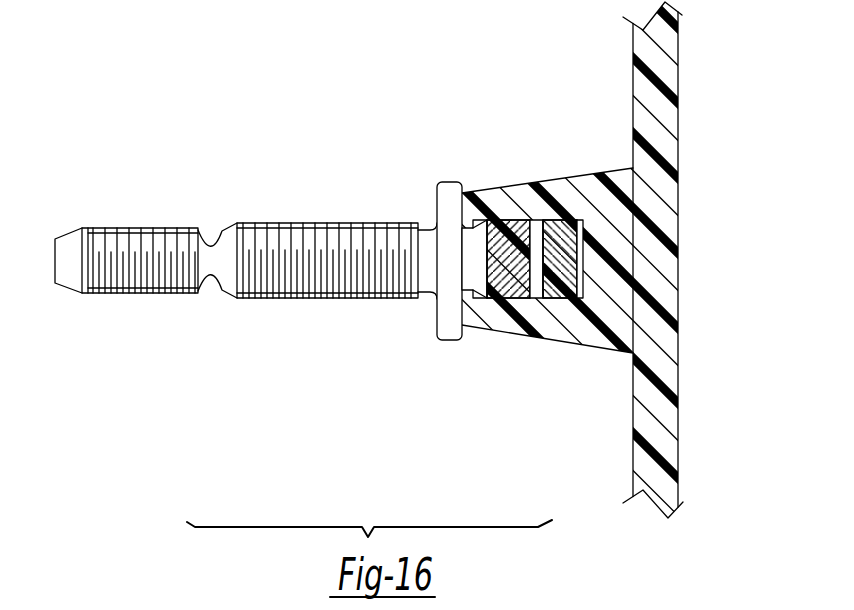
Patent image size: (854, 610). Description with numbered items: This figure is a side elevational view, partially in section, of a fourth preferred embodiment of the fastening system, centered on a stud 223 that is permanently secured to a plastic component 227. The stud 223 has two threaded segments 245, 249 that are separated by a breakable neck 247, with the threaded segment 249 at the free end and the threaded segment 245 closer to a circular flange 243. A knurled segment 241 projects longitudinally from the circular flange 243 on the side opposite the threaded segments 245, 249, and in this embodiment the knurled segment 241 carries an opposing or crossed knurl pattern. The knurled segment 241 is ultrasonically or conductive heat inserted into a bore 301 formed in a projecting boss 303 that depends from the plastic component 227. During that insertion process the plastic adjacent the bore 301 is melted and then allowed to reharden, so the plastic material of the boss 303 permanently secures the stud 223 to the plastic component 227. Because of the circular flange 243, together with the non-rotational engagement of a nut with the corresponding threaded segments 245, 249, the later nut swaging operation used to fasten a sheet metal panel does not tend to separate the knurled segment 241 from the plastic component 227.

The stud 223 is at (271, 216).
The plastic component 227 is at (670, 455).
The knurled segment 241 is at (510, 235).
The circular flange 243 is at (453, 187).
The threaded segment 245 is at (343, 258).
The breakable neck 247 is at (212, 268).
The threaded segment 249 is at (135, 252).
The bore 301 is at (549, 226).
The projecting boss 303 is at (617, 177).